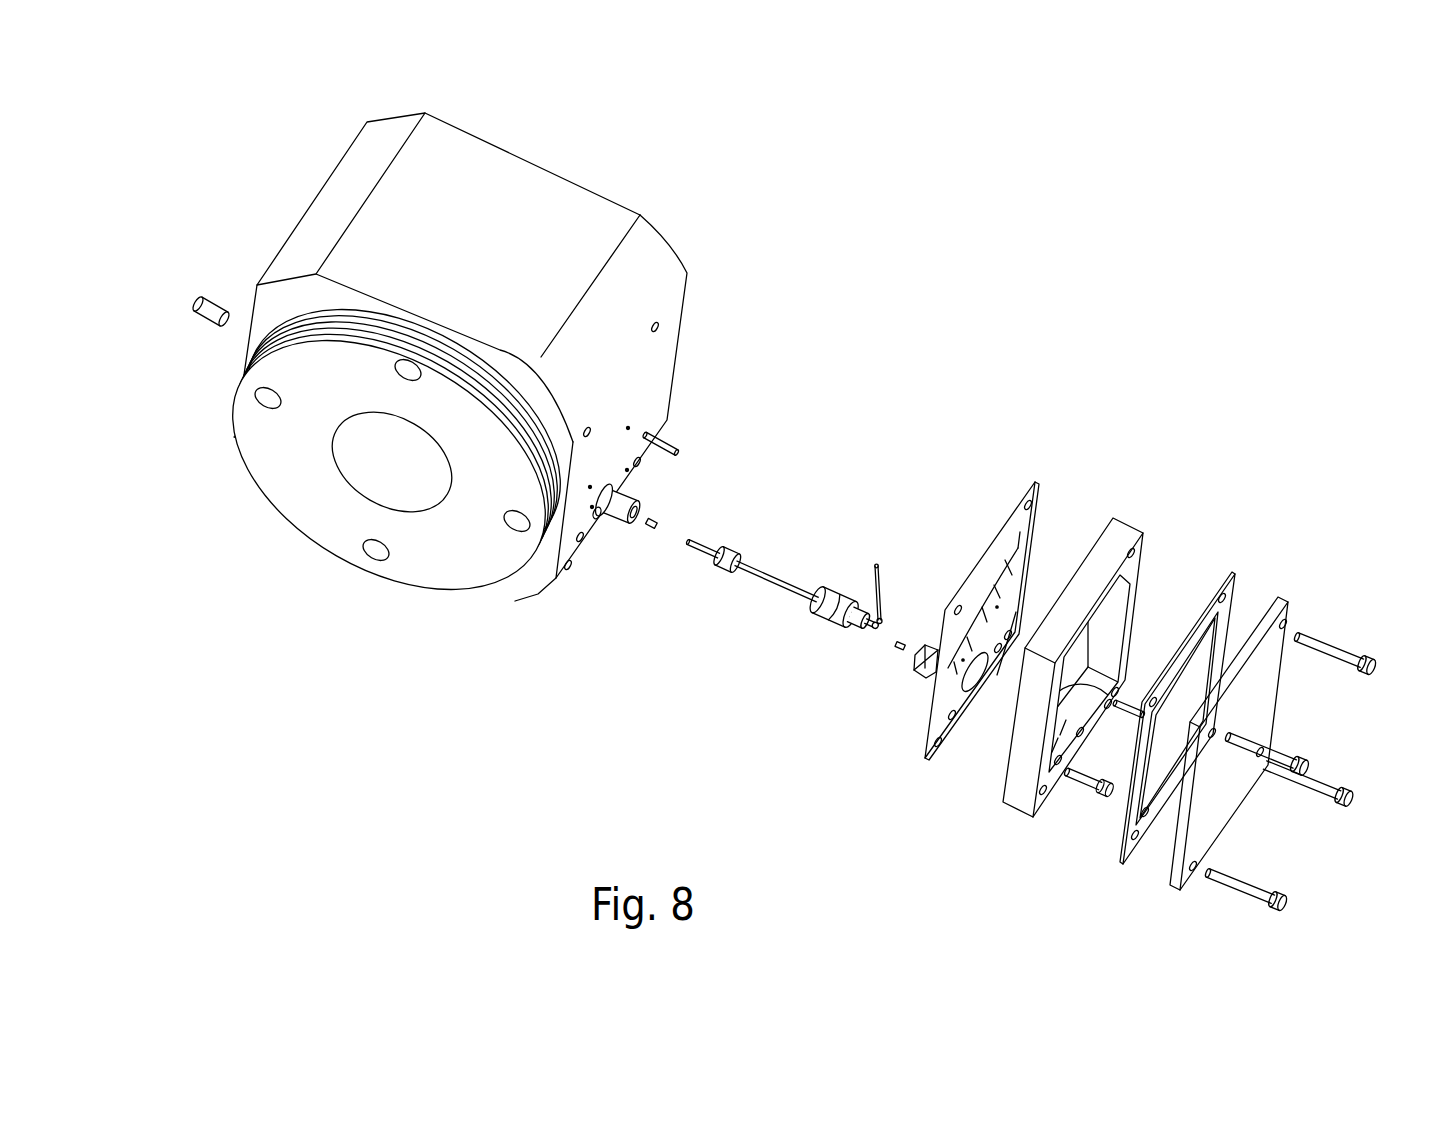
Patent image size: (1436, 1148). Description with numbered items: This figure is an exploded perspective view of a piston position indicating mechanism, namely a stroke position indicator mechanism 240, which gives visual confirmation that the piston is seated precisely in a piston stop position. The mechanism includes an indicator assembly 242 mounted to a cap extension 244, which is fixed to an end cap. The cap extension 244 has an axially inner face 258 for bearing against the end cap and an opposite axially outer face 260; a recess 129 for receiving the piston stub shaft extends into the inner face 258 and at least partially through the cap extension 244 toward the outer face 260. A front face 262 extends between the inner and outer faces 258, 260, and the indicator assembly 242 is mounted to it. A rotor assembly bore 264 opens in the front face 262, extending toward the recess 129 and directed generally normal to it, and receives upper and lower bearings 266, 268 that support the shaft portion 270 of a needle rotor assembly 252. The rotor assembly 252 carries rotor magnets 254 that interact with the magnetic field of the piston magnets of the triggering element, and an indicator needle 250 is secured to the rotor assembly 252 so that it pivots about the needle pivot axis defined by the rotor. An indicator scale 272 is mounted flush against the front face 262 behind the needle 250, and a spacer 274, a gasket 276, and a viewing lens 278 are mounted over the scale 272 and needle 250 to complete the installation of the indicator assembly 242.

The axially inner face 258 is at (607, 120).
The cap extension 244 is at (322, 190).
The front face 262 is at (648, 383).
The axially outer face 260 is at (443, 535).
The recess 129 is at (372, 462).
The rotor assembly bore 264 is at (601, 516).
The upper bearing 266 is at (637, 500).
The needle rotor assembly 252 is at (783, 644).
The shaft portion 270 is at (765, 572).
The rotor magnets 254 is at (733, 548).
The indicator needle 250 is at (882, 608).
The lower bearing 268 is at (920, 672).
The indicator assembly 242 is at (1151, 644).
The stroke position indicator mechanism 240 is at (1210, 418).
The indicator scale 272 is at (1035, 484).
The spacer 274 is at (1130, 525).
The gasket 276 is at (1234, 575).
The viewing lens 278 is at (1287, 620).